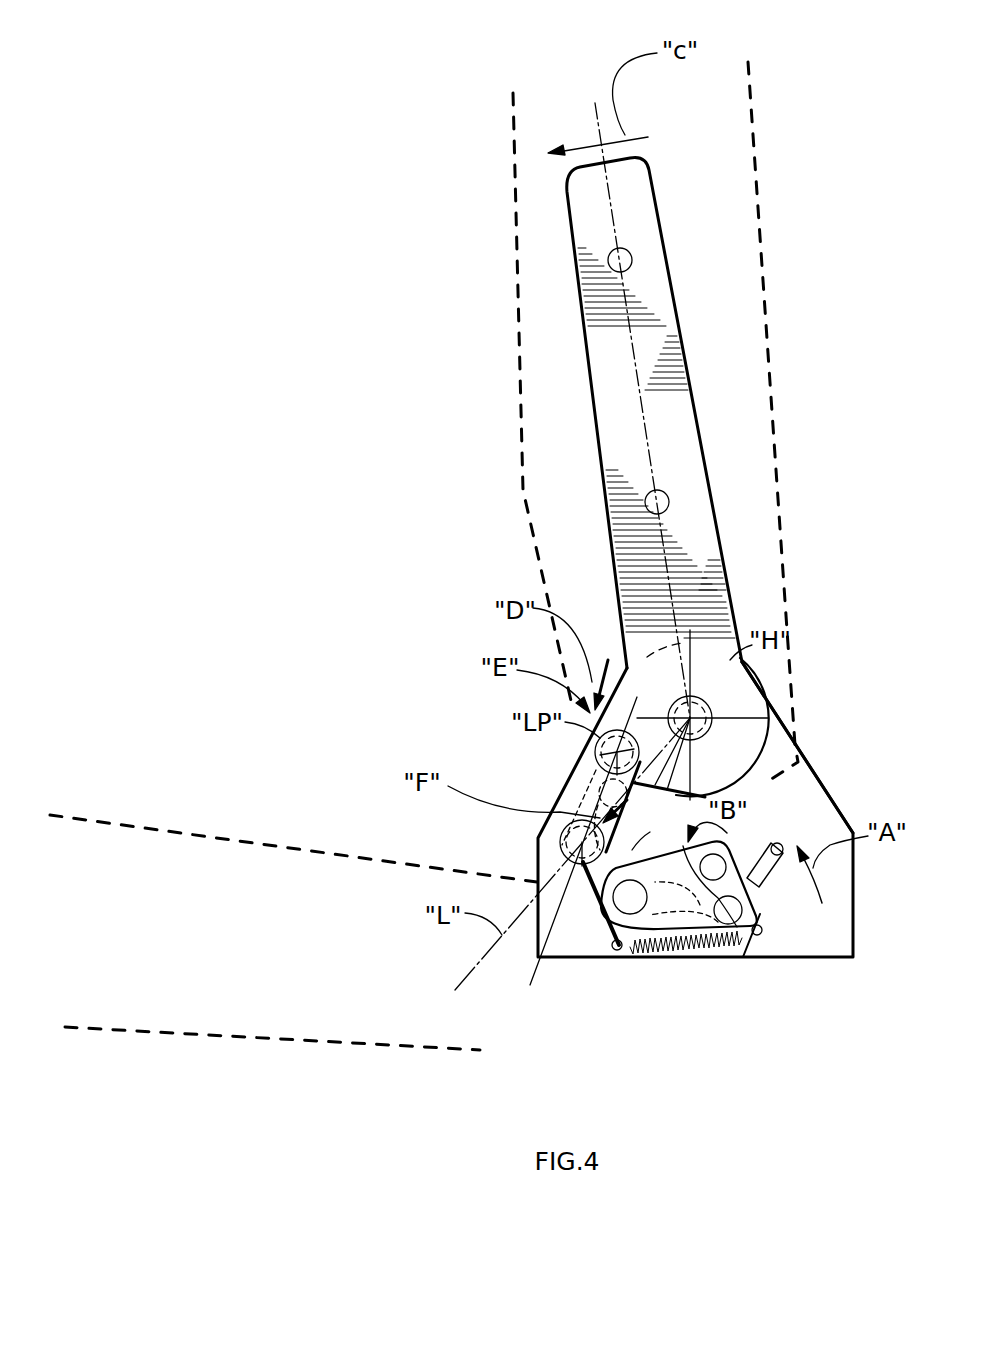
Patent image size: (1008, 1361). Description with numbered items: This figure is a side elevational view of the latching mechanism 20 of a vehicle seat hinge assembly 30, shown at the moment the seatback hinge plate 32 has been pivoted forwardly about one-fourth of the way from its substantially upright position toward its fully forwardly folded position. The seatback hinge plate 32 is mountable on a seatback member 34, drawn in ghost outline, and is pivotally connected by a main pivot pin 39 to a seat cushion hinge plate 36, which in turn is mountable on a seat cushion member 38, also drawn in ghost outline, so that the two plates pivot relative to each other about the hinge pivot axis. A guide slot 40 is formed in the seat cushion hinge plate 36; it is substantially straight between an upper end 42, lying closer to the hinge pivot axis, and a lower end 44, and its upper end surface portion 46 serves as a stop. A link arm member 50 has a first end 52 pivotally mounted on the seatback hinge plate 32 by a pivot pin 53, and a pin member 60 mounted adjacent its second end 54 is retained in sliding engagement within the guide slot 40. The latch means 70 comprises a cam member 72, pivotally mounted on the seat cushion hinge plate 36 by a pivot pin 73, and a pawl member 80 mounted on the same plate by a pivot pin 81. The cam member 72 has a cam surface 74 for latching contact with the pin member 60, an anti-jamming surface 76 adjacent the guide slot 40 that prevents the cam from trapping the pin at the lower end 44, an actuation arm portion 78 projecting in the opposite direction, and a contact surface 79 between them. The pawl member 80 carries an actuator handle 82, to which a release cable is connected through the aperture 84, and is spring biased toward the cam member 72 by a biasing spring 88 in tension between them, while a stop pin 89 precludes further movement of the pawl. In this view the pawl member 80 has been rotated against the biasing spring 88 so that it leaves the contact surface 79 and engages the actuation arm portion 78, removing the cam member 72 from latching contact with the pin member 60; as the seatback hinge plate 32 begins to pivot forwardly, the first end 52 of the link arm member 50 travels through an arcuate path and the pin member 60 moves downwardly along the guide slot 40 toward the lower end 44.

The latching mechanism 20 is at (842, 877).
The vehicle seat hinge assembly 30 is at (293, 237).
The seatback hinge plate 32 is at (652, 285).
The seatback member 34 is at (758, 452).
The seat cushion hinge plate 36 is at (818, 943).
The seat cushion member 38 is at (342, 1032).
The main pivot pin 39 is at (763, 698).
The guide slot 40 is at (655, 790).
The upper end 42 is at (633, 777).
The lower end 44 is at (568, 865).
The upper end surface portion 46 is at (606, 800).
The link arm member 50 is at (592, 775).
The first end 52 is at (640, 715).
The pivot pin 53 is at (648, 712).
The second end 54 is at (558, 855).
The pin member 60 is at (572, 822).
The latch means 70 is at (590, 940).
The cam member 72 is at (722, 910).
The pivot pin 73 is at (582, 918).
The cam surface 74 is at (637, 826).
The anti-jamming surface 76 is at (700, 861).
The actuation arm portion 78 is at (627, 953).
The contact surface 79 is at (693, 886).
The pawl member 80 is at (760, 922).
The pivot pin 81 is at (737, 932).
The actuator handle 82 is at (763, 868).
The aperture 84 is at (782, 860).
The biasing spring 88 is at (690, 950).
The stop pin 89 is at (740, 860).